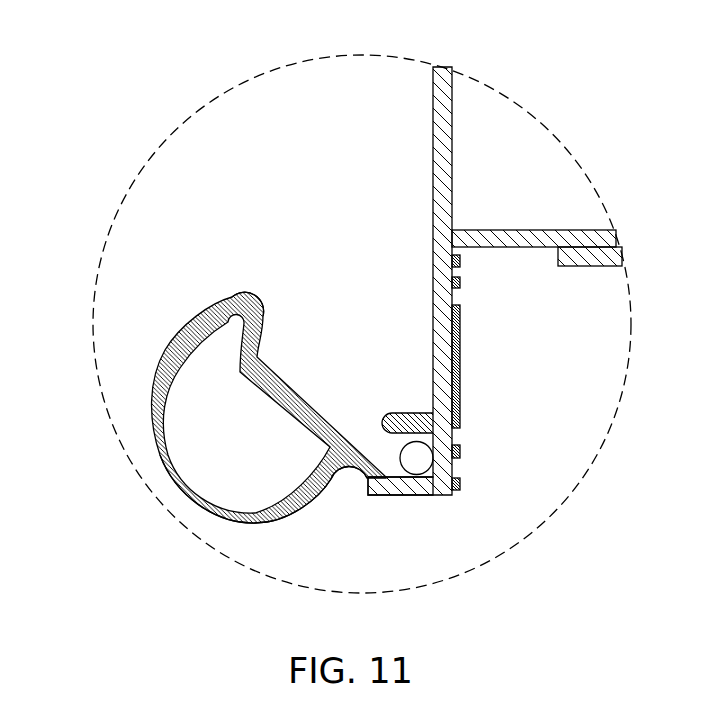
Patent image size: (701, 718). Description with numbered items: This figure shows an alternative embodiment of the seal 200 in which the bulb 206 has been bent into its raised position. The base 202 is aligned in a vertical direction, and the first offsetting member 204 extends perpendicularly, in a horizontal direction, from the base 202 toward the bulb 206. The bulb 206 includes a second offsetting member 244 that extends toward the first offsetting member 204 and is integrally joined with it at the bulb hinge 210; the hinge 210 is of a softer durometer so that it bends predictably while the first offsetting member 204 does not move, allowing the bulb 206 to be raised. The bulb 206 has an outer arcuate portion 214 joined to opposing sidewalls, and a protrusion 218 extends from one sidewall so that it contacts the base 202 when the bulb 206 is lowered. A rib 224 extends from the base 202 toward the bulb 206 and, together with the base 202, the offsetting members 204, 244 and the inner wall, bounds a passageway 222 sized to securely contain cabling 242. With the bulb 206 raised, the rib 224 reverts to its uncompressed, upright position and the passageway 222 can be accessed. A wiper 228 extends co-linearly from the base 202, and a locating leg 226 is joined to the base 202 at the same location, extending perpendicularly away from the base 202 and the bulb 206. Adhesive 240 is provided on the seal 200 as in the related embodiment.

The seal 200 is at (100, 47).
The base 202 is at (461, 482).
The first offsetting member 204 is at (430, 487).
The bulb 206 is at (173, 327).
The bulb hinge 210 is at (367, 481).
The outer arcuate portion 214 is at (183, 498).
The protrusion 218 is at (252, 298).
The passageway 222 is at (461, 451).
The rib 224 is at (388, 414).
The locating leg 226 is at (600, 231).
The wiper 228 is at (489, 104).
The adhesive 240 is at (461, 368).
The cabling 242 is at (416, 453).
The second offsetting member 244 is at (334, 483).